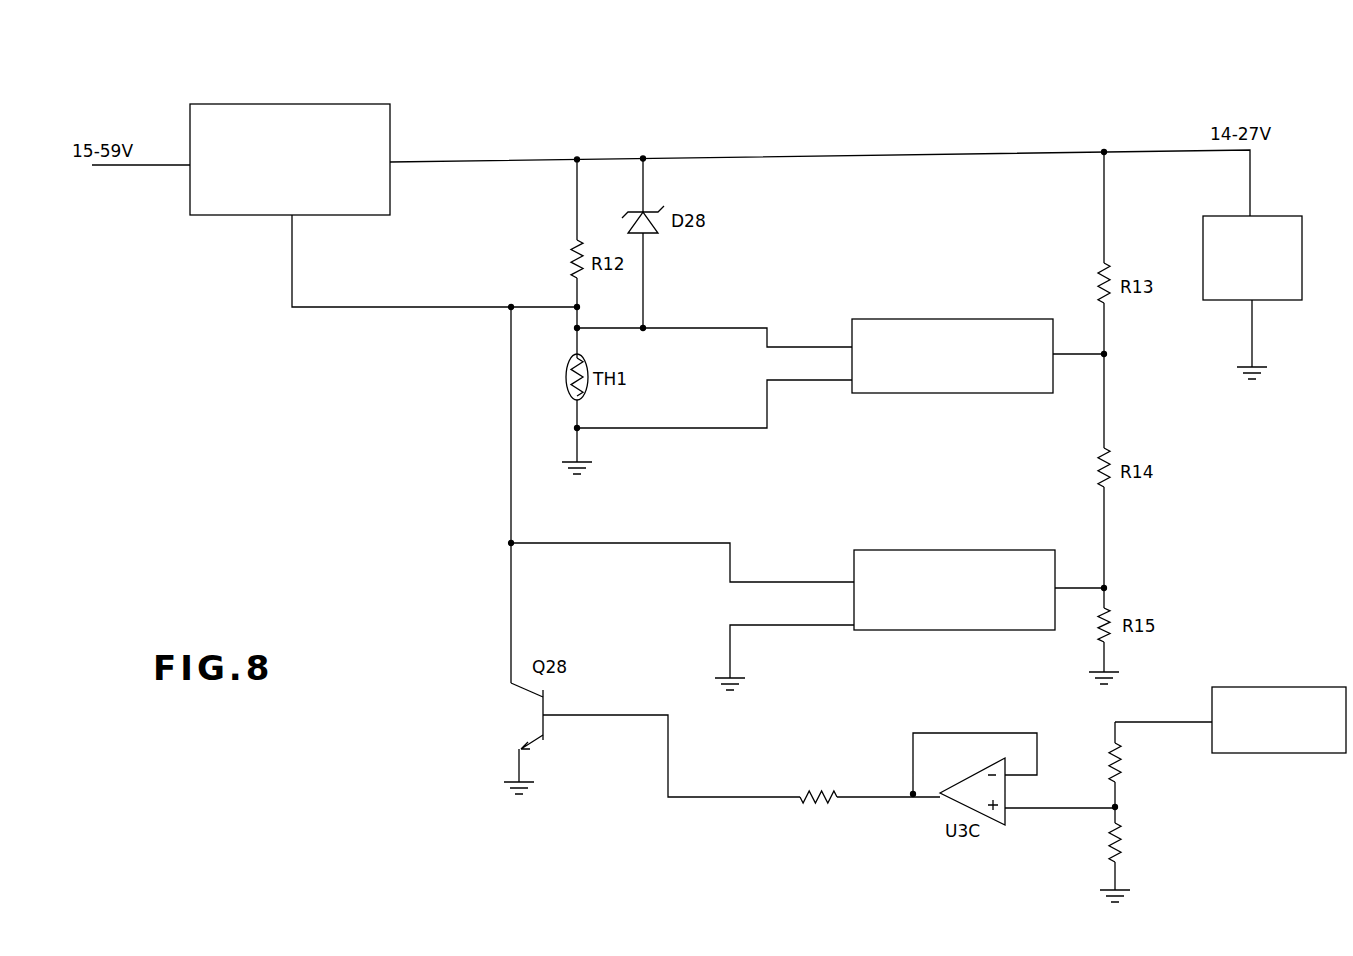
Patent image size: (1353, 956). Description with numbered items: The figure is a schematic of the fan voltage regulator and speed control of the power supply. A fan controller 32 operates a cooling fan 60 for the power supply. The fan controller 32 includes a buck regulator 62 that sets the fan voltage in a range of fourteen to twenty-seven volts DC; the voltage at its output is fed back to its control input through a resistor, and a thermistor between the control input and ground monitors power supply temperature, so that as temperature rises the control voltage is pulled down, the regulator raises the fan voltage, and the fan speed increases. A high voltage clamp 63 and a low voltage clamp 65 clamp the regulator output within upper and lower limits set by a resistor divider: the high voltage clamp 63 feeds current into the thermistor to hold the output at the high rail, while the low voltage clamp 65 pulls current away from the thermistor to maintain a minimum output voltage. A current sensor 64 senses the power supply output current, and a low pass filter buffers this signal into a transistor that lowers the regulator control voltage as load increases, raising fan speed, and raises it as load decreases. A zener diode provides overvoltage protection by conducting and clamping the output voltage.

The fan controller 32 is at (368, 447).
The cooling fan 60 is at (1272, 216).
The buck regulator 62 is at (390, 122).
The high voltage clamp 63 is at (948, 318).
The current sensor 64 is at (1262, 687).
The low voltage clamp 65 is at (956, 548).